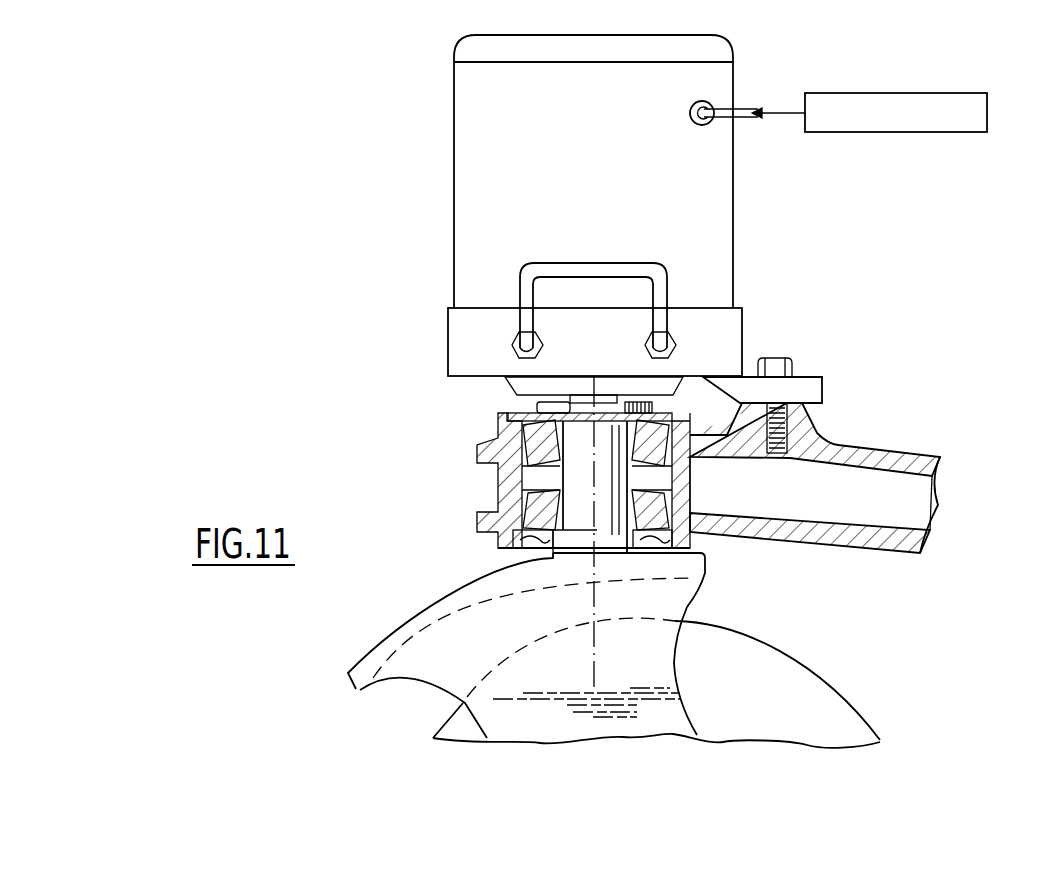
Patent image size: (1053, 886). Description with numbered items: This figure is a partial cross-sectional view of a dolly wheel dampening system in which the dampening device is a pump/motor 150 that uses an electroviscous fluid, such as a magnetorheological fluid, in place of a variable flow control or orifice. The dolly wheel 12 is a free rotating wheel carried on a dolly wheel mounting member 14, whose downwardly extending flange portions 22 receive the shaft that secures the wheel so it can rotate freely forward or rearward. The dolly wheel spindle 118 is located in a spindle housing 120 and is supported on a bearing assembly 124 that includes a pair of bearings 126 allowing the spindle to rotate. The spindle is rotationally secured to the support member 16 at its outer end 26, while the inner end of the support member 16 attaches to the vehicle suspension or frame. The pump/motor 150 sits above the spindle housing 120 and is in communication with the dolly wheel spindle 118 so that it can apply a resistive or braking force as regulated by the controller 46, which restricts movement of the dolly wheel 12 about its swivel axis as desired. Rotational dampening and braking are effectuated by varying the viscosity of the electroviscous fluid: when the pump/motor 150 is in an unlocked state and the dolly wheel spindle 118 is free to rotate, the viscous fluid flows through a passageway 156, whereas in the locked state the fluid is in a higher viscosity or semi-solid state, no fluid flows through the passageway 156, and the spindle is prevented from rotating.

The dolly wheel 12 is at (773, 658).
The dolly wheel mounting member 14 is at (657, 655).
The support member 16 is at (878, 515).
The flange portions 22 is at (487, 707).
The outer end 26 is at (706, 500).
The controller 46 is at (990, 93).
The dolly wheel spindle 118 is at (567, 484).
The spindle housing 120 is at (497, 424).
The bearing assembly 124 is at (550, 477).
The bearings 126 is at (660, 480).
The pump/motor 150 is at (467, 149).
The passageway 156 is at (590, 268).